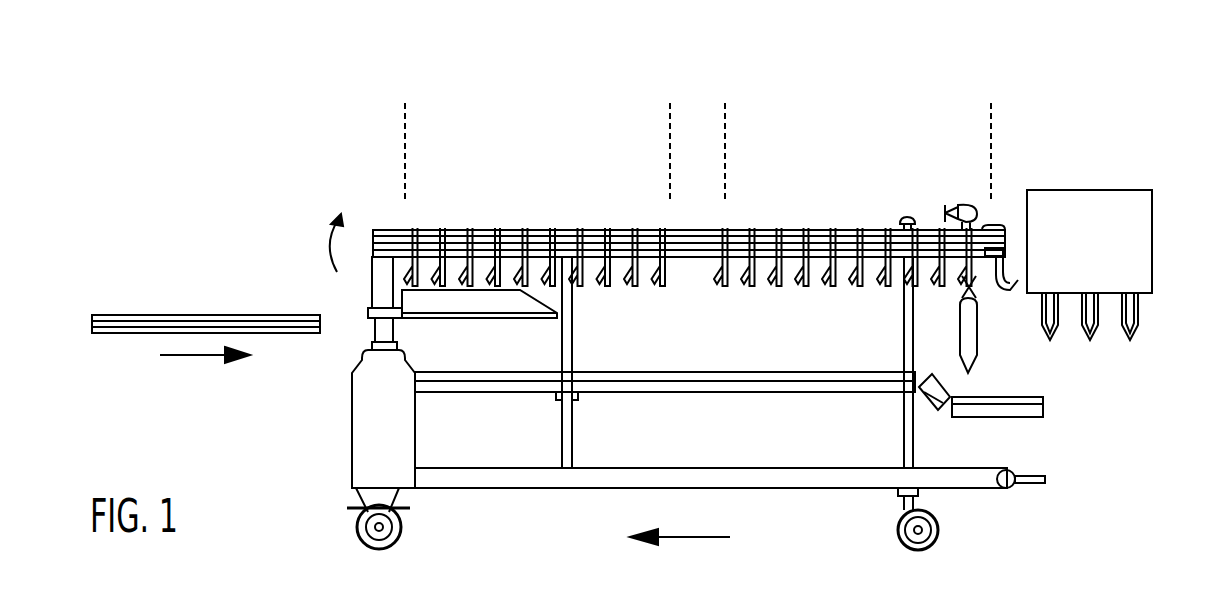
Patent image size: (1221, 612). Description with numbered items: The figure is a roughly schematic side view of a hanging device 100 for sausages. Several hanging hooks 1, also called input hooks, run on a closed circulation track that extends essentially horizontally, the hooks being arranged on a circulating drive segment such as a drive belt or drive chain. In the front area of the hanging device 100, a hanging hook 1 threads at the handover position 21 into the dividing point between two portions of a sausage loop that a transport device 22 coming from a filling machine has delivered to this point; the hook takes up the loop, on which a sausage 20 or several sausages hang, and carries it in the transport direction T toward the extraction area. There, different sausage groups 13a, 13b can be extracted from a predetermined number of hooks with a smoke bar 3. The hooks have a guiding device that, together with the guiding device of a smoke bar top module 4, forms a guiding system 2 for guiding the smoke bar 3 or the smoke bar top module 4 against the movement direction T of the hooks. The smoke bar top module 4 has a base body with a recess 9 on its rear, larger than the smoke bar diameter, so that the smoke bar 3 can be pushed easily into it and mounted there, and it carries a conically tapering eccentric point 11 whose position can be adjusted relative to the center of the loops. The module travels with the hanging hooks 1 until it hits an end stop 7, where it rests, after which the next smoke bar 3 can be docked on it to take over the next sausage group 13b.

The hanging device 100 is at (1200, 80).
The hanging hook 1 is at (834, 288).
The guiding system 2 is at (457, 250).
The smoke bar 3 is at (258, 318).
The smoke bar top module 4 is at (489, 318).
The end stop 7 is at (403, 322).
The recess 9 is at (372, 300).
The point 11 is at (572, 310).
The sausage group 13a is at (670, 103).
The sausage group 13b is at (991, 103).
The sausage 20 is at (978, 342).
The handover position 21 is at (1003, 228).
The transport device 22 is at (1116, 195).
The transport direction T is at (680, 552).